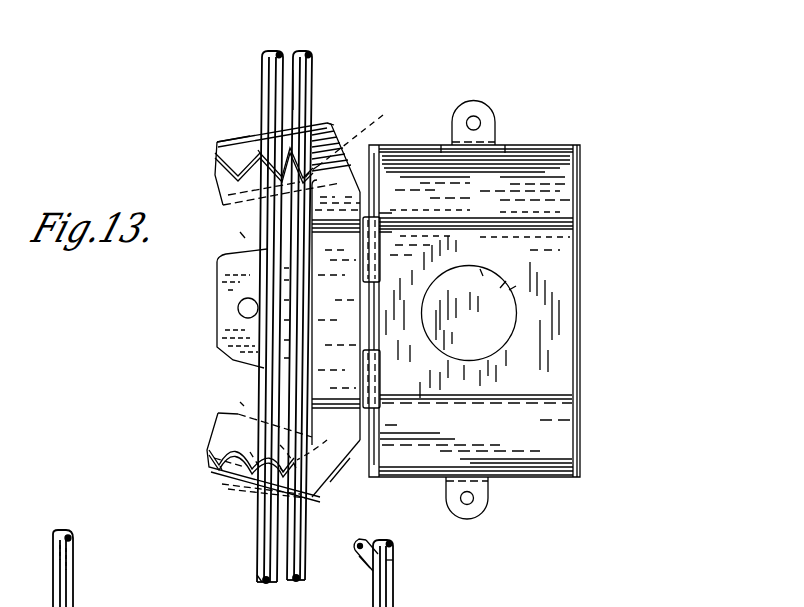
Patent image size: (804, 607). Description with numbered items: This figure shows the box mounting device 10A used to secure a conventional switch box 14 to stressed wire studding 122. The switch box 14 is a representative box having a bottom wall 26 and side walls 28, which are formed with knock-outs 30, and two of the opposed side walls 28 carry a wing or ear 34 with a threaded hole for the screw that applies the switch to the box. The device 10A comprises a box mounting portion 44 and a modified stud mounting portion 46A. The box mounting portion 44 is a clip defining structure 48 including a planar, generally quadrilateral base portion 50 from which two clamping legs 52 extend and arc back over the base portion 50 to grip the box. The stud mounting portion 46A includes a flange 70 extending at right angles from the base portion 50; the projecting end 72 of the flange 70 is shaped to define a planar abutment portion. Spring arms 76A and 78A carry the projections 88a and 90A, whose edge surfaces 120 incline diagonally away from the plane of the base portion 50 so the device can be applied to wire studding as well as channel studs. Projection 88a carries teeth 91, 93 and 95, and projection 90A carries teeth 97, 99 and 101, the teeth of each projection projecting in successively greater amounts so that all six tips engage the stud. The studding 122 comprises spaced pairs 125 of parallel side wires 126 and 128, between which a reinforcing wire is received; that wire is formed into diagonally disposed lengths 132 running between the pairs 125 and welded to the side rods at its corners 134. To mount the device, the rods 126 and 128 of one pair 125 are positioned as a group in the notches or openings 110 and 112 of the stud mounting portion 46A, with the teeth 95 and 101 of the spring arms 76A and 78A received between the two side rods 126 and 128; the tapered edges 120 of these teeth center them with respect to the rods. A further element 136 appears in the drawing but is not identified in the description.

The switch box 14 is at (223, 60).
The box mounting device 10A is at (331, 118).
The bottom wall 26 is at (560, 263).
The side walls 28 is at (398, 150).
The knock-outs 30 is at (527, 324).
The wing or ear 34 is at (495, 121).
The box mounting portion 44 is at (397, 217).
The clip defining structure 48 is at (382, 215).
The base portion 50 is at (373, 310).
The clamping legs 52 is at (381, 257).
The flange 70 is at (284, 297).
The projecting end 72 is at (227, 297).
The spring arm 76A is at (323, 145).
The spring arm 78A is at (320, 466).
The projection 88a is at (227, 183).
The projection 90A is at (226, 433).
The tooth 91 is at (222, 183).
The tooth 93 is at (258, 148).
The tooth 95 is at (318, 90).
The tooth 97 is at (209, 457).
The tooth 99 is at (221, 475).
The tooth 101 is at (283, 470).
The notch or opening 110 is at (244, 237).
The notch or opening 112 is at (242, 404).
The edge surface 120 is at (341, 282).
The stressed wire studding 122 is at (395, 592).
The pair of side wires 125 is at (256, 570).
The side wire 126 is at (263, 522).
The side wire 128 is at (303, 532).
The diagonally disposed lengths 132 is at (364, 563).
The corners 134 is at (395, 577).
The post 136 is at (283, 568).
The stud mounting portion 46A is at (237, 136).